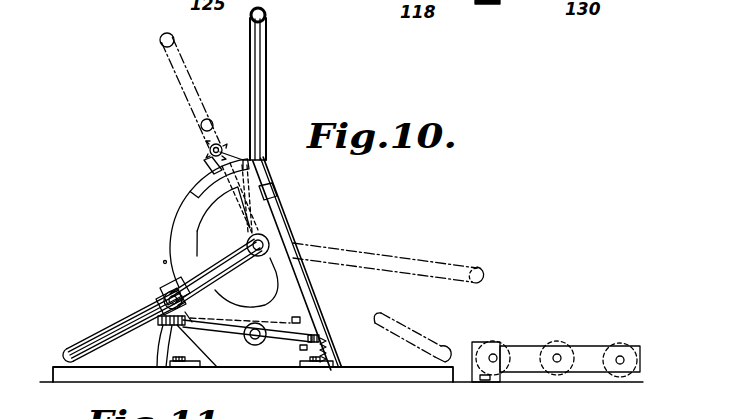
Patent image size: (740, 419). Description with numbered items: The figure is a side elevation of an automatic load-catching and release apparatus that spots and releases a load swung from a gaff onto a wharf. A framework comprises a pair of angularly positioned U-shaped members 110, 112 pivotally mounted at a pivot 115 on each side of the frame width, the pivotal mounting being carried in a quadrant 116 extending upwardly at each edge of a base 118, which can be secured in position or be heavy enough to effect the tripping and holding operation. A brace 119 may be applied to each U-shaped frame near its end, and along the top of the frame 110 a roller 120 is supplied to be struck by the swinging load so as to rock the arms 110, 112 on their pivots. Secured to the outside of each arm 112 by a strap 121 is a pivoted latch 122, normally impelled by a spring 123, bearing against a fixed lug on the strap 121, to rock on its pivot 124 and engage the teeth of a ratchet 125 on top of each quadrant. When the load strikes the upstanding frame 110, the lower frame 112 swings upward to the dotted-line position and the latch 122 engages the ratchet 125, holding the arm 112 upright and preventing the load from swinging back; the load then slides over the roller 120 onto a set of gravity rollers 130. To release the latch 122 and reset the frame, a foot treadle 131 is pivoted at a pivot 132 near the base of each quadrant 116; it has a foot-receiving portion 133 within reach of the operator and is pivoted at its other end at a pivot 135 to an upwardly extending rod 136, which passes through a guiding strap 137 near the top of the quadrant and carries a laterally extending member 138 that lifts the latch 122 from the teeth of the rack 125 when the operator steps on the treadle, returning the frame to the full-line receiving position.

The U-shaped member 110 is at (267, 66).
The U-shaped member 112 is at (178, 80).
The pivot 115 is at (266, 238).
The quadrant 116 is at (175, 223).
The base 118 is at (373, 378).
The brace 119 is at (157, 306).
The roller 120 is at (267, 13).
The strap 121 is at (163, 297).
The latch 122 is at (202, 162).
The spring 123 is at (200, 263).
The latch pivot 124 is at (158, 326).
The ratchet 125 is at (205, 166).
The gravity rollers 130 is at (589, 352).
The foot treadle 131 is at (224, 340).
The treadle pivot 132 is at (262, 342).
The foot-receiving portion 133 is at (165, 346).
The rod pivot 135 is at (326, 332).
The rod 136 is at (304, 283).
The guiding strap 137 is at (277, 192).
The laterally extending member 138 is at (195, 193).